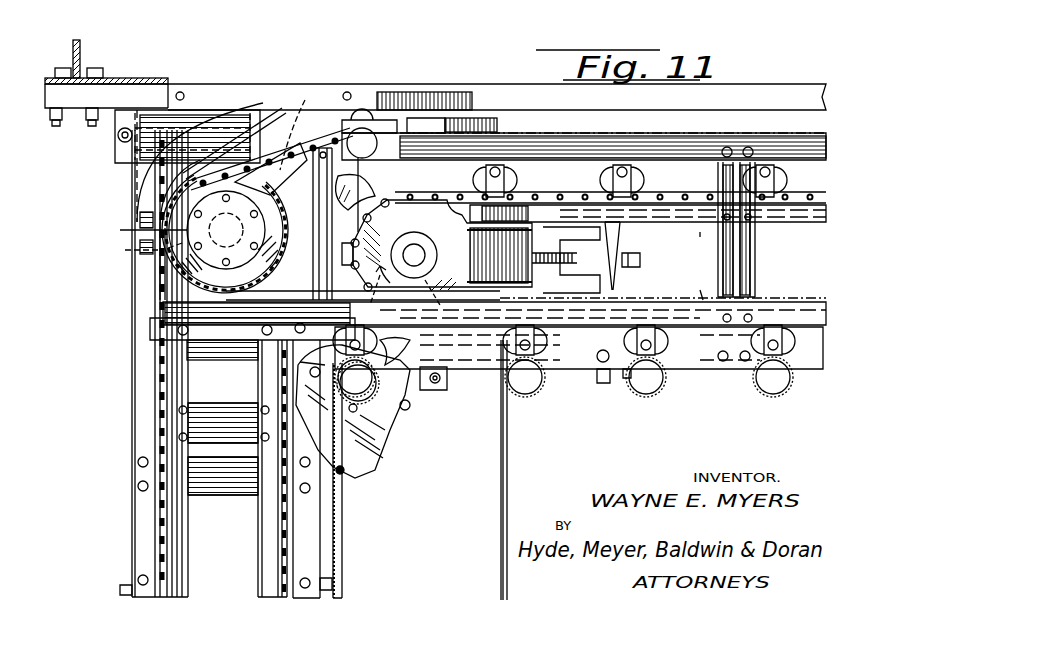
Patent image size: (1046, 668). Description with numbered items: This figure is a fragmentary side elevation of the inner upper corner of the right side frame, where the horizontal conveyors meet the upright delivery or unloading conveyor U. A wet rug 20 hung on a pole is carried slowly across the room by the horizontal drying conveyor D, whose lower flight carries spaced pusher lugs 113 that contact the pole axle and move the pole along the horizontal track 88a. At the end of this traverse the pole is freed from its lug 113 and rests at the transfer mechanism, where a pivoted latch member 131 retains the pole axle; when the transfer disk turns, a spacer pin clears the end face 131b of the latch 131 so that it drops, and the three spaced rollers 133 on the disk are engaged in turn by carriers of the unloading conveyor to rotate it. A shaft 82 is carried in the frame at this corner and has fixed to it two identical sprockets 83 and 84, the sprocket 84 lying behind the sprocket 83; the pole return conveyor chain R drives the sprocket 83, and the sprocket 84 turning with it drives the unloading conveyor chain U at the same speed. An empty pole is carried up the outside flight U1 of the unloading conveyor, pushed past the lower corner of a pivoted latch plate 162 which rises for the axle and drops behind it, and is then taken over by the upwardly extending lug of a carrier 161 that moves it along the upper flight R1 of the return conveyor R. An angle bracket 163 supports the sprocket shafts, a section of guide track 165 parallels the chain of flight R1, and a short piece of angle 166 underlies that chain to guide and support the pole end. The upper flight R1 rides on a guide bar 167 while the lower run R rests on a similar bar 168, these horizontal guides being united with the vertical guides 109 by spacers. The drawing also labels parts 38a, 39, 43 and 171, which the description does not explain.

The wet rug 20 is at (344, 540).
The frame bar 38a is at (435, 97).
The pin 39 is at (80, 60).
The cam 43 is at (390, 352).
The shaft 82 is at (228, 232).
The sprocket 83 is at (142, 230).
The sprocket 84 is at (141, 250).
The horizontal track 88a is at (583, 372).
The vertical guides 109 is at (262, 530).
The pusher lug 113 is at (508, 176).
The latch member 131 is at (430, 395).
The end face of latch 131b is at (312, 356).
The rollers 133 is at (410, 405).
The carriers (pushers) 161 is at (140, 176).
The pivoted latch plate 162 is at (260, 100).
The angle bracket 163 is at (305, 100).
The guide track section 165 is at (135, 190).
The angle piece 166 is at (280, 160).
The guide or track bar 167 is at (712, 162).
The guide bar 168 is at (798, 310).
The support 171 is at (415, 118).
The horizontal drying conveyor D is at (716, 220).
The return conveyor R is at (118, 288).
The upper flight of return conveyor R1 is at (438, 125).
The upright delivery or unloading conveyor U is at (290, 515).
The outside flight of unloading conveyor U1 is at (165, 433).